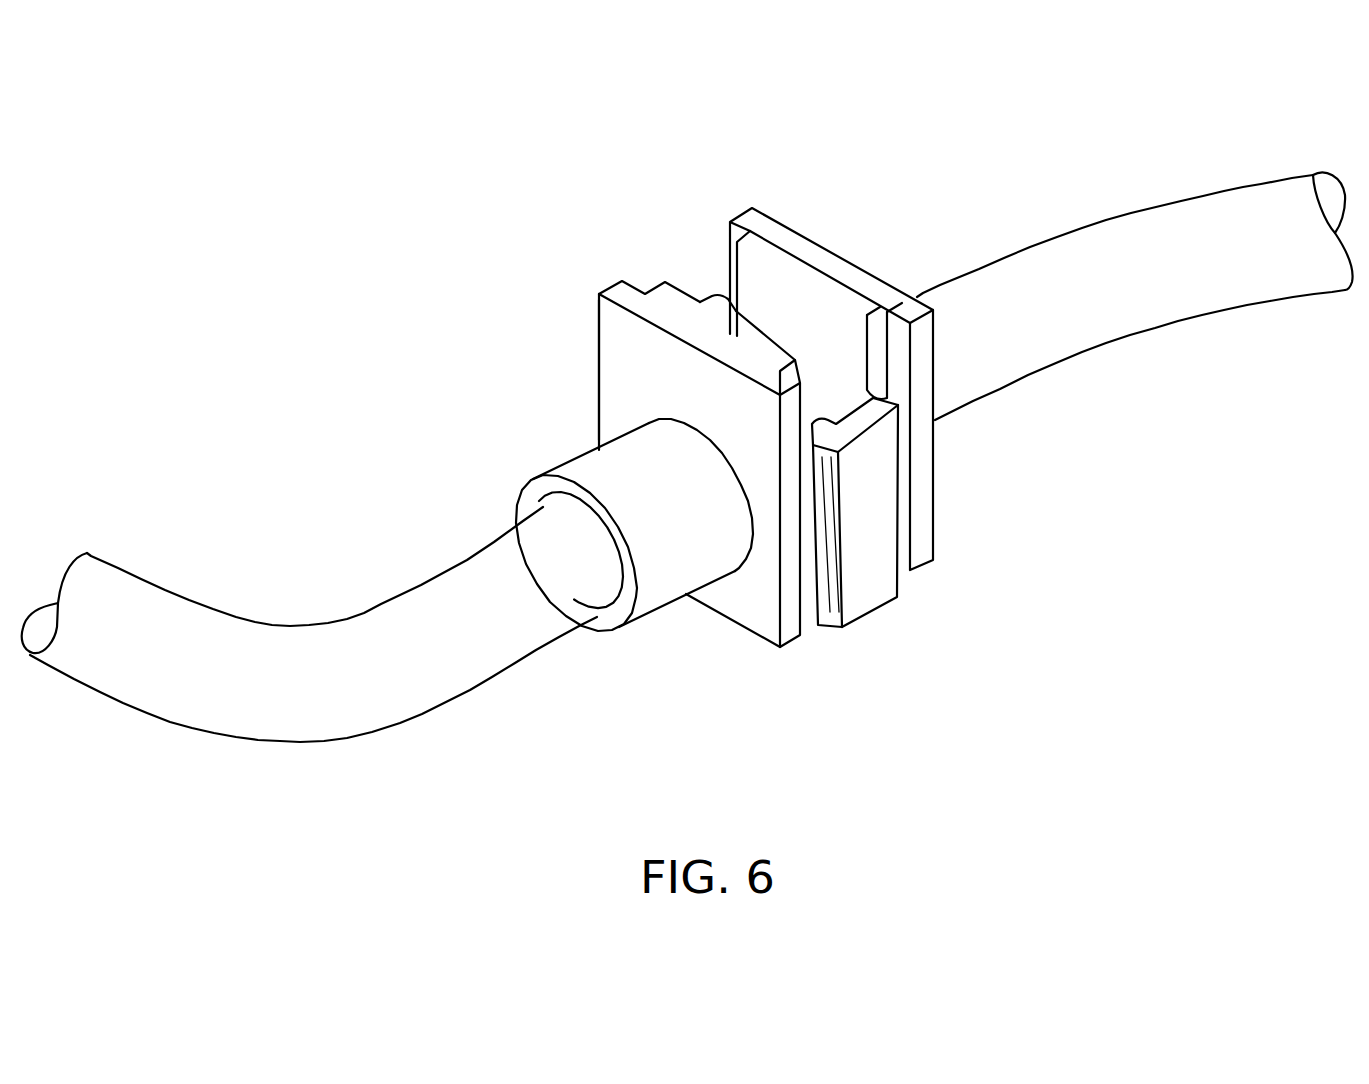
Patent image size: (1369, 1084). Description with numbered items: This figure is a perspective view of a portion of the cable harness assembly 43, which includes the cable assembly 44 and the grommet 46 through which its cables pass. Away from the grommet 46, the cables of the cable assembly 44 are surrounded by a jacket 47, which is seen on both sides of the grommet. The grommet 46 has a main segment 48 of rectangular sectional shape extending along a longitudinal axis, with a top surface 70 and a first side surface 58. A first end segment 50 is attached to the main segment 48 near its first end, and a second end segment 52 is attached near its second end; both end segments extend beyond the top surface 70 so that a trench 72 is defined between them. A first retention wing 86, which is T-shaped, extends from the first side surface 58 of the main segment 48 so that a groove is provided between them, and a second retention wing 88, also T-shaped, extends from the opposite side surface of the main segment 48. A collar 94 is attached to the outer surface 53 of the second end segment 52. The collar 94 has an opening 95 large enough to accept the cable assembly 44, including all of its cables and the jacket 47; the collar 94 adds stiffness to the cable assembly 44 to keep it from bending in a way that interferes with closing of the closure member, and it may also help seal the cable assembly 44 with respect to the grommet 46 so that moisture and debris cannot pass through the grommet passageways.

The cable harness assembly 43 is at (465, 199).
The cable assembly 44 is at (309, 611).
The grommet 46 is at (754, 443).
The jacket 47 is at (230, 637).
The main segment 48 is at (868, 308).
The first end segment 50 is at (808, 445).
The second end segment 52 is at (685, 508).
The outer surface 53 is at (620, 397).
The first side surface 58 is at (808, 600).
The top surface 70 is at (808, 366).
The trench 72 is at (695, 264).
The first retention wing 86 is at (880, 512).
The second retention wing 88 is at (703, 300).
The collar 94 is at (660, 598).
The opening 95 is at (615, 558).